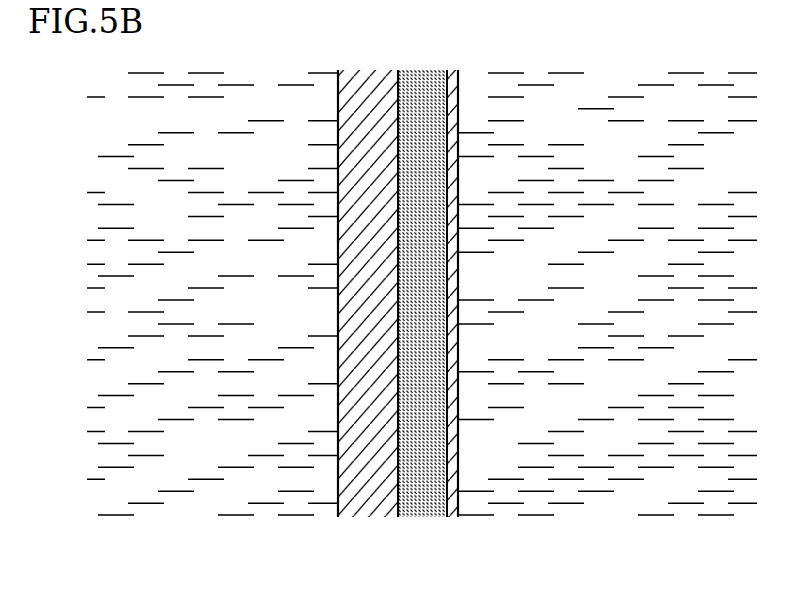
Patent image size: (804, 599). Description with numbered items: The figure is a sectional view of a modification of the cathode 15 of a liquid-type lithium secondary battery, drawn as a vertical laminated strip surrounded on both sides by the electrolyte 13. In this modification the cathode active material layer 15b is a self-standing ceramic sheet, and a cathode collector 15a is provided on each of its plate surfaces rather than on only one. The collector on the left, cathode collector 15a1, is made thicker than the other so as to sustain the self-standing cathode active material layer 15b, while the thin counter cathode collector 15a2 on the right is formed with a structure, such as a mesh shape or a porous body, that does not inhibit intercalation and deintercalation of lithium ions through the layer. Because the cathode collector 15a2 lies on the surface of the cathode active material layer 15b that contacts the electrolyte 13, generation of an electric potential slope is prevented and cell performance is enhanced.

The electrolyte 13 is at (602, 76).
The cathode 15 is at (426, 296).
The cathode collector 15a is at (426, 321).
The cathode collector 15a1 is at (368, 517).
The cathode collector 15a2 is at (507, 543).
The cathode active material layer 15b is at (422, 517).